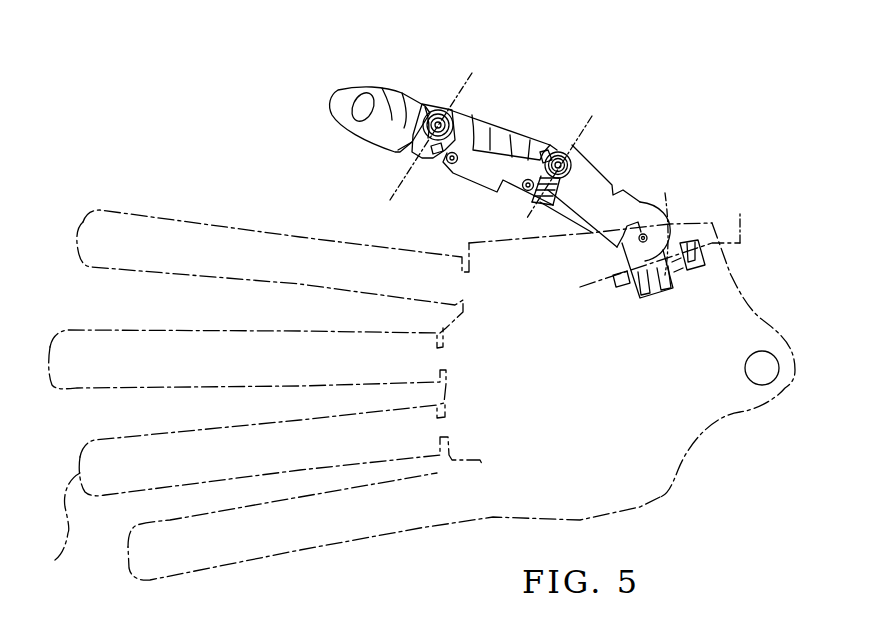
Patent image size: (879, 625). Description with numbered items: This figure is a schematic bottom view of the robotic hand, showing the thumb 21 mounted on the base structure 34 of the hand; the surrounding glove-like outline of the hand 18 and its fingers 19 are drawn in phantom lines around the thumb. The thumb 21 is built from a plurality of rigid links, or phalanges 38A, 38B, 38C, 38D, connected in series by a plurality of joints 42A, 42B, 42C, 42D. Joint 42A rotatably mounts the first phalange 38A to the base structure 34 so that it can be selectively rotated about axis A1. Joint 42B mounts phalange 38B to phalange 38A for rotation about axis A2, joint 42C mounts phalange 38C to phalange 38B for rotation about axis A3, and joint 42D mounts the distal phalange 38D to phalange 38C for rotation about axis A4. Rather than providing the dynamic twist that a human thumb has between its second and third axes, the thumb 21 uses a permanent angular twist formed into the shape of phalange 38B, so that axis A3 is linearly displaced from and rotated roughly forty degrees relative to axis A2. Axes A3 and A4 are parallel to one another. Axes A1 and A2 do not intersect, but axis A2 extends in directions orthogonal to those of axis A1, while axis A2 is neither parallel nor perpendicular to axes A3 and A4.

The glove / hand 18 is at (660, 498).
The glove finger 19 is at (83, 222).
The thumb 21 is at (312, 110).
The base structure 34 is at (733, 273).
The phalange 38A is at (653, 247).
The phalange 38B is at (592, 180).
The phalange 38C is at (463, 127).
The phalange 38D is at (367, 110).
The joint 42A is at (620, 284).
The joint 42B is at (625, 240).
The joint 42C is at (551, 152).
The joint 42D is at (427, 103).
The axis A1 is at (740, 213).
The axis A2 is at (665, 193).
The axis A3 is at (590, 117).
The axis A4 is at (462, 72).